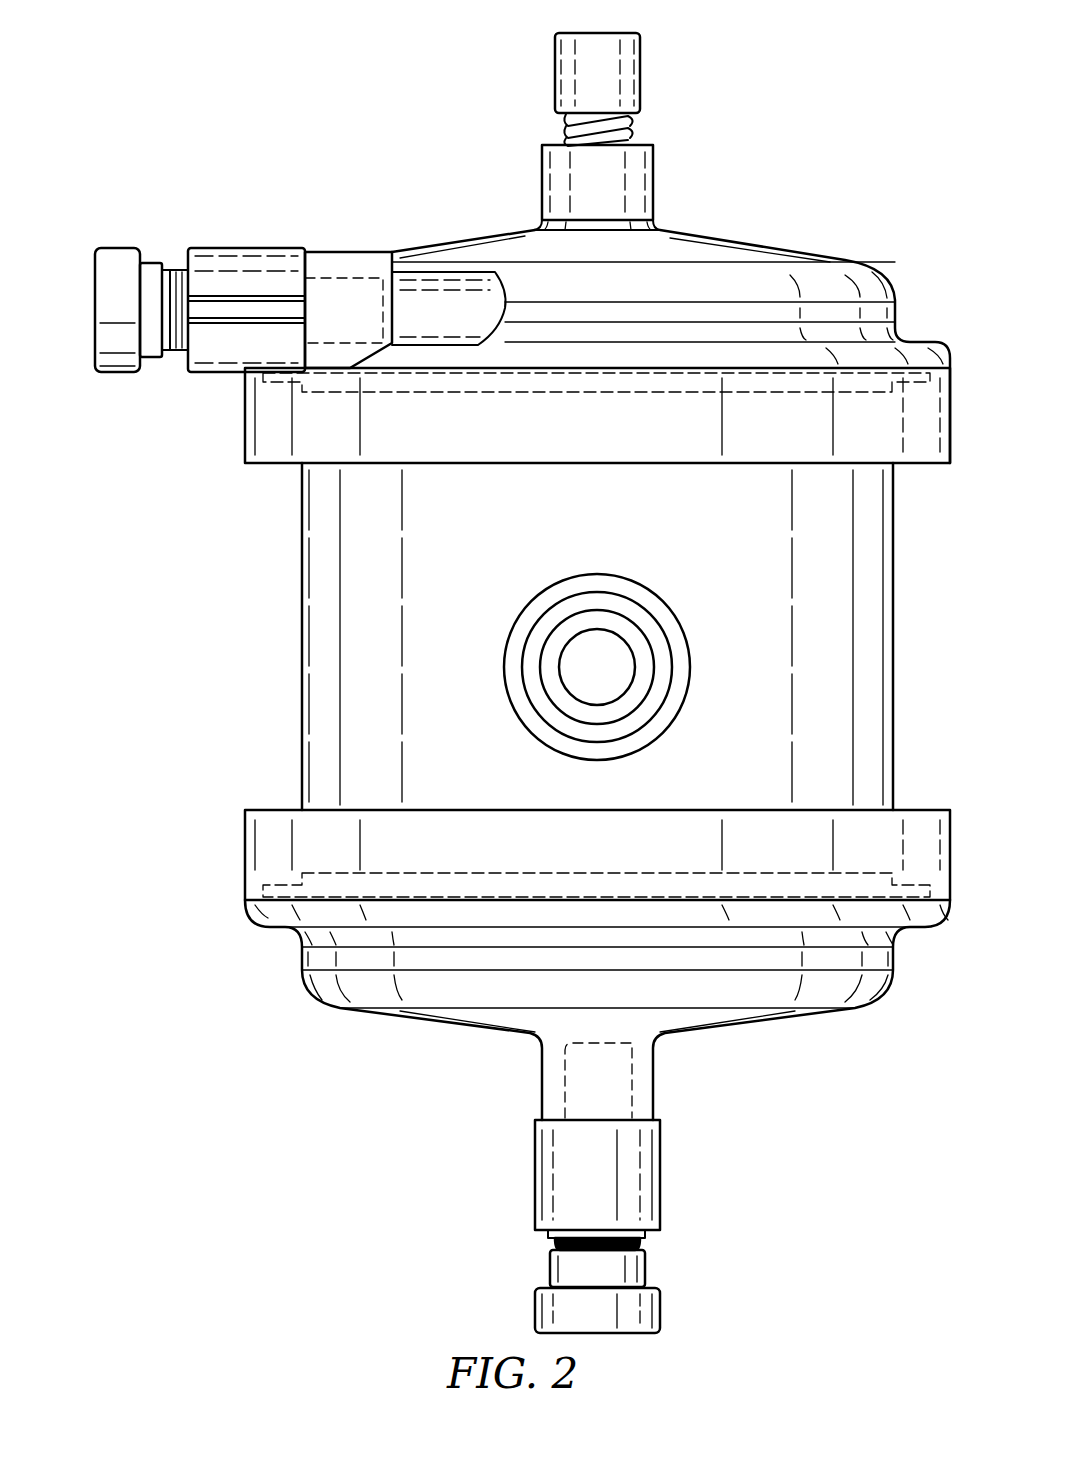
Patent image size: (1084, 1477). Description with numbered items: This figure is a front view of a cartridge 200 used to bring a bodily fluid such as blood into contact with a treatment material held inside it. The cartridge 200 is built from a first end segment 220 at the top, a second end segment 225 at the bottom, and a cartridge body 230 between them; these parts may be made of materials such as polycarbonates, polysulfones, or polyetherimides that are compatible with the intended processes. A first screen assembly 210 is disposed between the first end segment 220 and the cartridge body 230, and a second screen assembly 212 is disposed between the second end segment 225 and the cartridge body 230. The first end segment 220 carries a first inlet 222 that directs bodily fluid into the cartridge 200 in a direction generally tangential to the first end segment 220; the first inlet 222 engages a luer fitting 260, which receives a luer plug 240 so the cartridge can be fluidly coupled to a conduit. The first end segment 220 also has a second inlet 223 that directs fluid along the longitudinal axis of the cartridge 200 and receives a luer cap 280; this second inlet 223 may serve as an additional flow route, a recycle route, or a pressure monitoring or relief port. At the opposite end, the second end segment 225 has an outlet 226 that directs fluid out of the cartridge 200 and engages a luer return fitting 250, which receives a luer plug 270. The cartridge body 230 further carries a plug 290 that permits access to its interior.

The cartridge 200 is at (297, 90).
The first screen assembly 210 is at (583, 398).
The second screen assembly 212 is at (515, 873).
The first end segment 220 is at (463, 240).
The first inlet 222 is at (345, 252).
The second inlet 223 is at (655, 183).
The second end segment 225 is at (793, 1020).
The outlet 226 is at (653, 1080).
The cartridge body 230 is at (301, 606).
The luer plug 240 is at (118, 375).
The luer return fitting 250 is at (660, 1175).
The luer fitting 260 is at (246, 249).
The luer plug 270 is at (660, 1303).
The luer cap 280 is at (640, 62).
The plug 290 is at (640, 590).